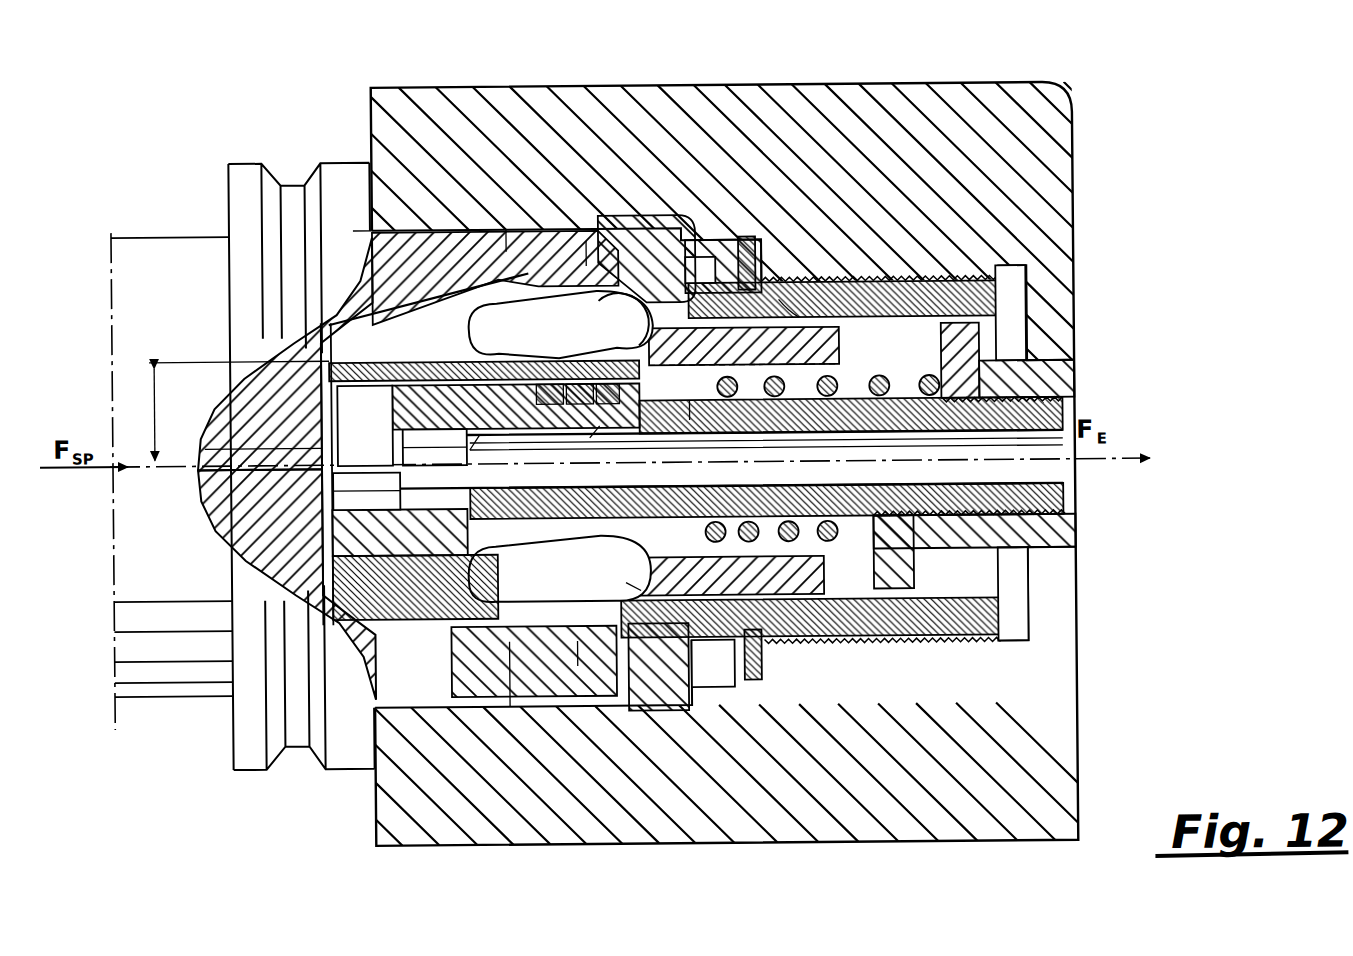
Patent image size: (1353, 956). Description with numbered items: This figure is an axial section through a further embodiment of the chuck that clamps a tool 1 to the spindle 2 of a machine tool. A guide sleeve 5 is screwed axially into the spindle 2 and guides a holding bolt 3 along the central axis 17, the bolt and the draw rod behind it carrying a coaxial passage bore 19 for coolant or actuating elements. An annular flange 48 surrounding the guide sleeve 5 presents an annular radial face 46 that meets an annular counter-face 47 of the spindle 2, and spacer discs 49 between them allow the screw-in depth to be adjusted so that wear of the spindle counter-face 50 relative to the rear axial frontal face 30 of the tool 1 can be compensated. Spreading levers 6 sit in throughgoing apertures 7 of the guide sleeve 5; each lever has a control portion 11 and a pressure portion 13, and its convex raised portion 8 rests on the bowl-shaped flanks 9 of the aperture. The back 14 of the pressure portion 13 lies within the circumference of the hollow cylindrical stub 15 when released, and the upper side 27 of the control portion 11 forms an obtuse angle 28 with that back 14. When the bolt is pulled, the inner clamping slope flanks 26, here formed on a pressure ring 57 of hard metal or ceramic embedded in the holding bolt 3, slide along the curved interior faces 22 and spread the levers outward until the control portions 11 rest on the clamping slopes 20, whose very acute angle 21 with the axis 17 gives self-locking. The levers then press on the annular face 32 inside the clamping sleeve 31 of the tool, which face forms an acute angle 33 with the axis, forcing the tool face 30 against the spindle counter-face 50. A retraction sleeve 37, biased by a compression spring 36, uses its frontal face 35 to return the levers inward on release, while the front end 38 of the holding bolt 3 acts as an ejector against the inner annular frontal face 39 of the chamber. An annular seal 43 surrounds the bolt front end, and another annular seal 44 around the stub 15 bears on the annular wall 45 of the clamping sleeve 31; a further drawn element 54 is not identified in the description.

The tool holder 1 is at (148, 708).
The spindle 2 is at (428, 852).
The holding bolt 3 is at (925, 380).
The guide sleeve 5 is at (312, 579).
The spreading levers 6 is at (508, 228).
The throughgoing apertures 7 is at (523, 450).
The raised portion 8 is at (495, 581).
The flanks 9 is at (487, 331).
The control portion 11 is at (612, 400).
The pressure portion 13 is at (520, 306).
The back of the pressure portion 14 is at (524, 290).
The hollow cylindrical stub 15 is at (318, 622).
The central axis 17 is at (918, 452).
The passage bore 19 is at (1064, 467).
The clamping slopes 20 is at (514, 428).
The acute angle 21 is at (239, 411).
The interior faces 22 is at (566, 406).
The inner clamping slope flanks 26 is at (660, 400).
The upper side 27 is at (672, 700).
The obtuse angle 28 is at (554, 310).
The axial frontal face 30 is at (420, 148).
The clamping sleeve 31 is at (633, 215).
The annular face 32 is at (588, 240).
The acute angle 33 is at (365, 227).
The frontal face 35 is at (698, 408).
The compression spring 36 is at (870, 380).
The retraction sleeve 37 is at (793, 340).
The front end 38 is at (393, 412).
The inner annular frontal face 39 is at (318, 407).
The annular seal 43 is at (416, 587).
The annular seal 44 is at (352, 705).
The annular wall 45 is at (531, 650).
The annular radial face 46 is at (712, 262).
The annular counter-face 47 is at (782, 300).
The annular flange 48 is at (700, 245).
The spacer discs 49 is at (752, 262).
The counter-face 50 is at (374, 96).
The ring 54 is at (628, 660).
The pressure ring 57 is at (470, 448).